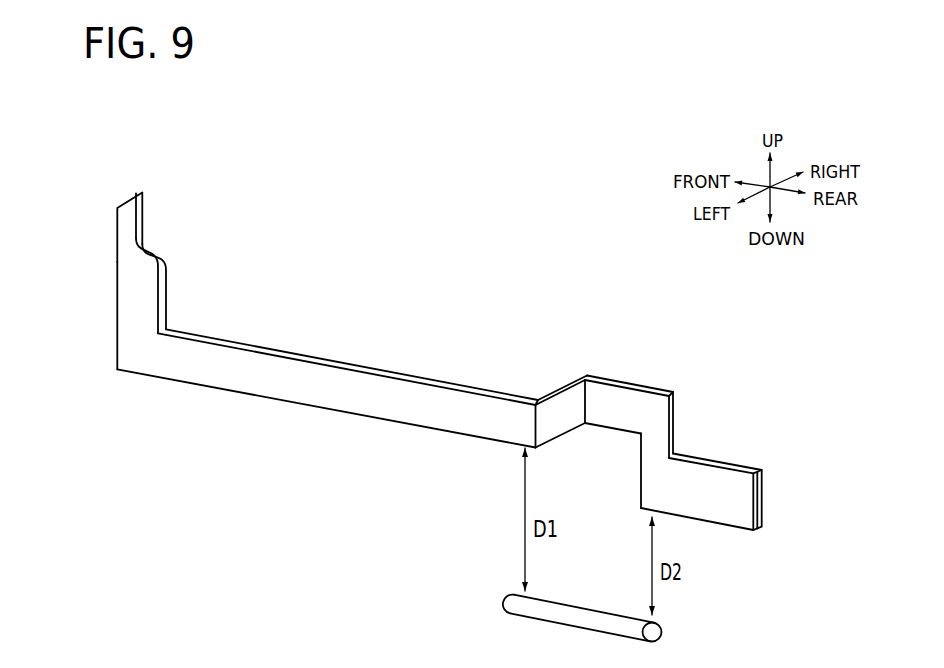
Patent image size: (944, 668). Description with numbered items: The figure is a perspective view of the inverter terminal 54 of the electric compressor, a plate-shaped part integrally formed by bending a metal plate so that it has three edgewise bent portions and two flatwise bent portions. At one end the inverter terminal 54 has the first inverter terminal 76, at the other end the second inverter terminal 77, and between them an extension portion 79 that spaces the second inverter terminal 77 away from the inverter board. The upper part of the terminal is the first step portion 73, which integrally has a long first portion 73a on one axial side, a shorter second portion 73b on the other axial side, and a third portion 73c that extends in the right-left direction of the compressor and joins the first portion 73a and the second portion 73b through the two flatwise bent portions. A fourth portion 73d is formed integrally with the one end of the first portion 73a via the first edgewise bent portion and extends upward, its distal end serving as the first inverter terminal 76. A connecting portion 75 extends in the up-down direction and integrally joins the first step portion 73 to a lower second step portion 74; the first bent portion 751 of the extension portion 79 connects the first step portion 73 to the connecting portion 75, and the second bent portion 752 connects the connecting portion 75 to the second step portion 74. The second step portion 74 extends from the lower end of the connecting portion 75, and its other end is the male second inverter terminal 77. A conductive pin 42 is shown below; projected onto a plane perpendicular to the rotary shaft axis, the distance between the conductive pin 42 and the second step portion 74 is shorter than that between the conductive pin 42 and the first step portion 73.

The conductive pin 42 is at (508, 596).
The inverter terminal 54 is at (428, 347).
The first step portion 73 is at (258, 379).
The first portion 73a is at (355, 398).
The second portion 73b is at (628, 418).
The third portion 73c is at (565, 418).
The fourth portion 73d is at (133, 293).
The second step portion 74 is at (700, 505).
The connecting portion 75 is at (651, 448).
The first inverter terminal 76 is at (128, 224).
The second inverter terminal 77 is at (743, 503).
The extension portion 79 is at (293, 342).
The first bent portion 751 is at (662, 400).
The second bent portion 752 is at (640, 505).